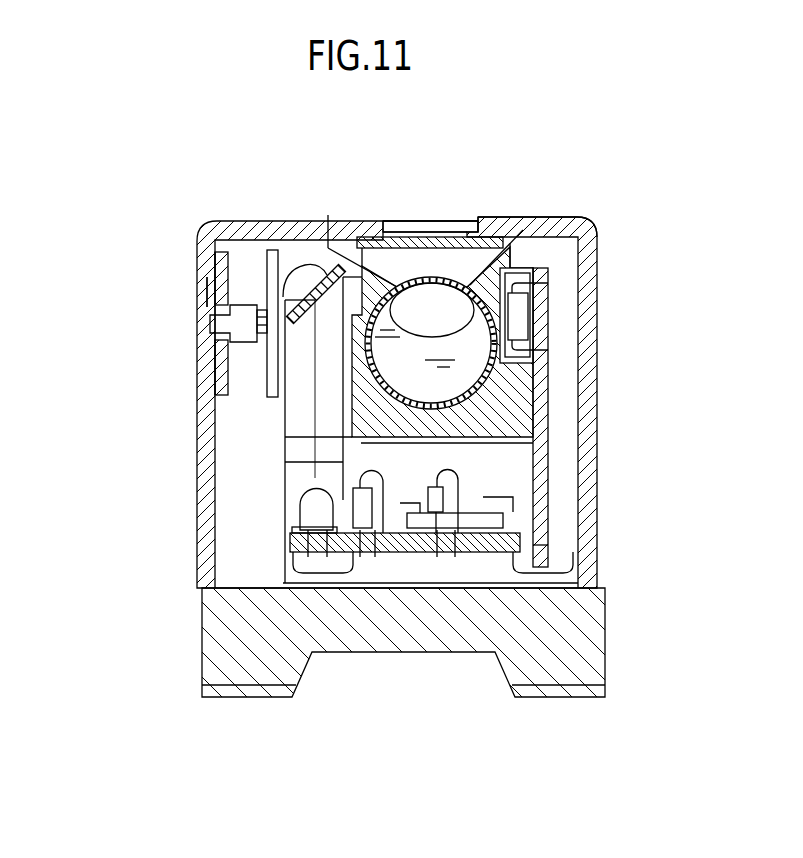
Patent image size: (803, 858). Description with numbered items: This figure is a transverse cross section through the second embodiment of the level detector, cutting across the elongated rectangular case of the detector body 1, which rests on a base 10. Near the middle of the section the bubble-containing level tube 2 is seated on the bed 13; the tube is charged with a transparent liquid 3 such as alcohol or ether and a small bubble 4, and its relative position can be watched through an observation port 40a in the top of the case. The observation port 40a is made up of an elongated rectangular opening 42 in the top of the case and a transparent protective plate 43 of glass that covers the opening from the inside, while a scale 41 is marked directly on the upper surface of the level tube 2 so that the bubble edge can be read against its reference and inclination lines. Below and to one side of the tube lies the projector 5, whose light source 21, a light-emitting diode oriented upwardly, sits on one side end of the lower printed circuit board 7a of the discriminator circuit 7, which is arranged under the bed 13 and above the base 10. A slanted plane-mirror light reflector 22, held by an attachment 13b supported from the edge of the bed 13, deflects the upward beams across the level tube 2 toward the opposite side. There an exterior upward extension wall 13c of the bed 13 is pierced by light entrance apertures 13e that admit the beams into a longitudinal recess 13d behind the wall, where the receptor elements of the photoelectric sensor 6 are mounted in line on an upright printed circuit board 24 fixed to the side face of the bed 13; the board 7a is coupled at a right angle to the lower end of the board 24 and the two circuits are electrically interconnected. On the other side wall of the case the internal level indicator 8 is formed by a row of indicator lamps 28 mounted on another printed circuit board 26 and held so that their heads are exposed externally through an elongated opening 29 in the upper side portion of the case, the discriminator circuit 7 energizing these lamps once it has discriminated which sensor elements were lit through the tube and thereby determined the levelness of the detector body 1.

The body 1 is at (200, 408).
The bubble-containing level tube 2 is at (520, 238).
The transparent liquid 3 is at (422, 373).
The bubble 4 is at (331, 252).
The projector 5 is at (292, 508).
The photoelectric sensor 6 is at (536, 312).
The discriminator circuit 7 is at (475, 522).
The printed circuit board 7a is at (445, 543).
The internal level indicator 8 is at (204, 347).
The base 10 is at (583, 637).
The bed 13 is at (500, 419).
The attachment 13b is at (283, 423).
The exterior upward extension wall 13c is at (520, 270).
The longitudinal recess 13d is at (540, 270).
The light entrance apertures 13e is at (470, 355).
The light source 21 is at (240, 551).
The light reflector 22 is at (305, 277).
The printed circuit board 24 is at (546, 458).
The printed circuit board 26 is at (272, 263).
The switch 28 is at (222, 410).
The elongated opening 29 is at (202, 295).
The observation port 40a is at (454, 212).
The scale 41 is at (431, 278).
The elongated rectangular opening 42 is at (400, 225).
The transparent protective plate 43 is at (433, 204).